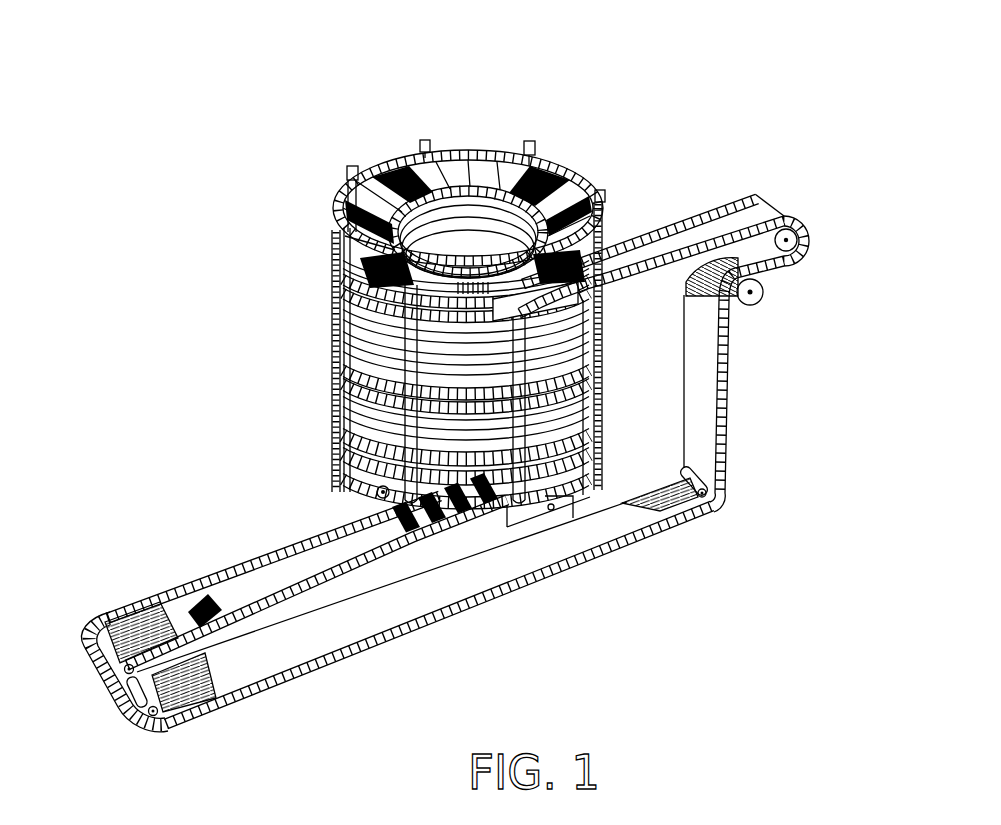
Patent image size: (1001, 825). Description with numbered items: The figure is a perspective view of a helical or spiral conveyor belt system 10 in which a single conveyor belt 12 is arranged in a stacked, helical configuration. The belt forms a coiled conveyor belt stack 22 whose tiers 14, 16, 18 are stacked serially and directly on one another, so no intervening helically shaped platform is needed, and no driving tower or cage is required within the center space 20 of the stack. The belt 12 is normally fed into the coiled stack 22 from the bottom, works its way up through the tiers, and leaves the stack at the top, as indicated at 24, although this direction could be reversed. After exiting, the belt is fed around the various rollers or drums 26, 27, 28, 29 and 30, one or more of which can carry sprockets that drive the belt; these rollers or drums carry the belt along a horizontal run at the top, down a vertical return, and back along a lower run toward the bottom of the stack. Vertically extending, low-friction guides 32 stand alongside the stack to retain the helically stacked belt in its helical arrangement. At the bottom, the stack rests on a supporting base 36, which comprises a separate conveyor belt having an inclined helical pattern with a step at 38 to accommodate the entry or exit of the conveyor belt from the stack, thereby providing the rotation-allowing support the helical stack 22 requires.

The helical or spiral conveyor belt system 10 is at (652, 80).
The conveyor belt 12 is at (357, 350).
The tier 14 is at (350, 465).
The tier 16 is at (347, 452).
The tier 18 is at (347, 430).
The center space 20 is at (507, 232).
The coiled conveyor belt stack 22 is at (480, 130).
The belt exit at top of stack 24 is at (650, 238).
The roller or drum 26 is at (806, 246).
The roller or drum 27 is at (752, 305).
The roller or drum 28 is at (681, 512).
The roller or drum 29 is at (170, 713).
The roller or drum 30 is at (127, 674).
The vertically extending low-friction guides 32 is at (423, 140).
The supporting base 36 is at (377, 492).
The step 38 is at (418, 535).